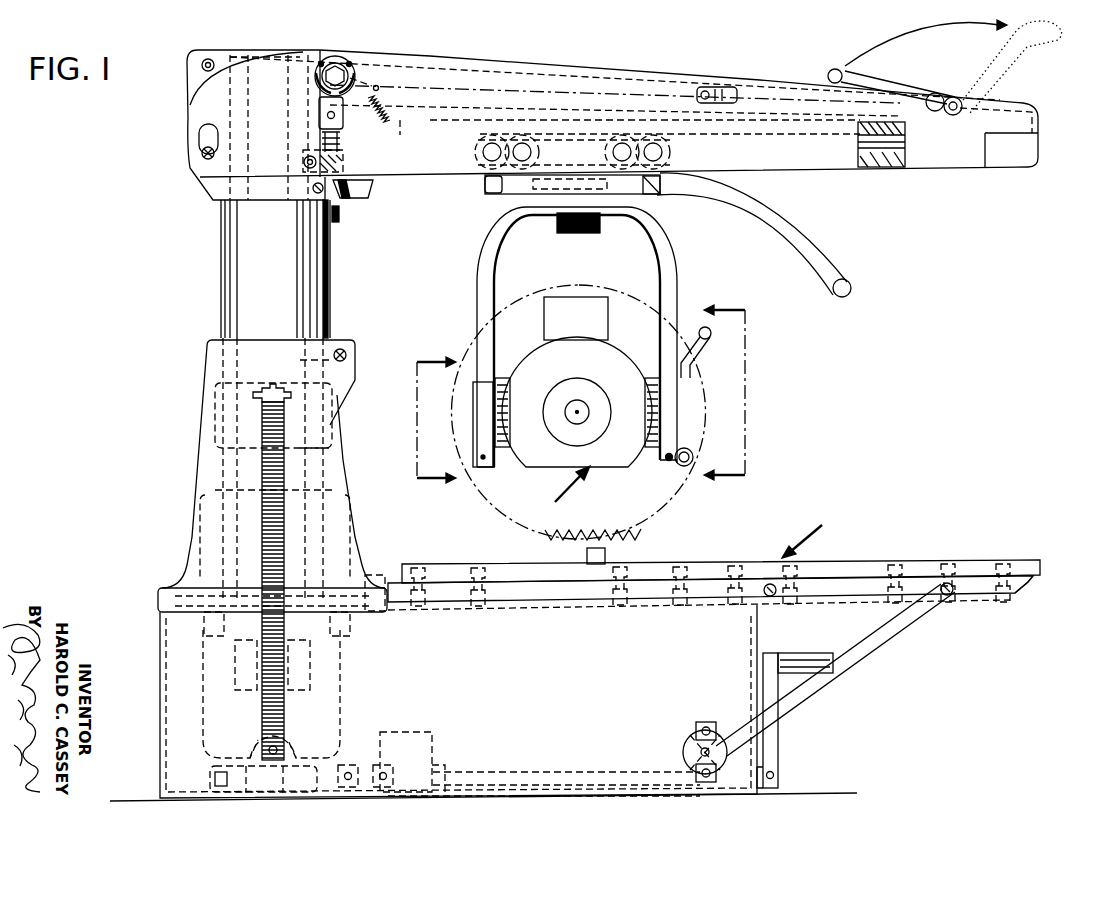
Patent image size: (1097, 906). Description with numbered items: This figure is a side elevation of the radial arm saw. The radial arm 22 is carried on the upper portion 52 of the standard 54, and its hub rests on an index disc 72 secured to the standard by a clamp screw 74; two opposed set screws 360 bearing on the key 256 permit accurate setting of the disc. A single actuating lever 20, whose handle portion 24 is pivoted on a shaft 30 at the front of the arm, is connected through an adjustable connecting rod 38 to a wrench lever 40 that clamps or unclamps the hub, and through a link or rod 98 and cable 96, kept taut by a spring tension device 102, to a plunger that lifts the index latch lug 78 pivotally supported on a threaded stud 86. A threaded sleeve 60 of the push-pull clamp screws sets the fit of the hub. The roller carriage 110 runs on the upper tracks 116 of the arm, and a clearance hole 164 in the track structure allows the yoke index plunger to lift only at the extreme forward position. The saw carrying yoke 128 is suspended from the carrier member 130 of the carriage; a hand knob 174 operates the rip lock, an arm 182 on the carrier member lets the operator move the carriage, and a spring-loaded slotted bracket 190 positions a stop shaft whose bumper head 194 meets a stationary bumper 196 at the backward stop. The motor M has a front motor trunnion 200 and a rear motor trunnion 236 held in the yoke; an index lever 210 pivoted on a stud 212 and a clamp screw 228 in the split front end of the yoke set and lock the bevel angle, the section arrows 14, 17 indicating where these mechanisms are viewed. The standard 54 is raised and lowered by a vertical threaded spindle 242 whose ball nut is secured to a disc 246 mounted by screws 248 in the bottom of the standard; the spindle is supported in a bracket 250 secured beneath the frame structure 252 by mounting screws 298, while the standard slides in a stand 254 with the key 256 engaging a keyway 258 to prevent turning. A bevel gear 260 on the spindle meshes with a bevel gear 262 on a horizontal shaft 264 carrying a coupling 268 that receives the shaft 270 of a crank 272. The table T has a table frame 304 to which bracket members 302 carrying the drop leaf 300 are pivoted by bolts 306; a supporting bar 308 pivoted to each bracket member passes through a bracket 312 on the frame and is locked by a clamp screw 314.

The actuating lever 20 is at (831, 70).
The radial arm 22 is at (546, 60).
The handle portion 24 is at (1019, 67).
The horizontal rod or shaft 30 is at (951, 115).
The adjustable connecting rod 38 is at (436, 123).
The wrench lever 40 is at (347, 118).
The upper portion of the standard 52 is at (222, 114).
The standard 54 is at (222, 238).
The externally and internally threaded sleeve 60 is at (202, 64).
The index disc 72 is at (205, 186).
The clamp screw 74 is at (300, 215).
The index latch lug 78 is at (343, 160).
The threaded stud 86 is at (304, 162).
The cable 96 is at (460, 86).
The link or rod 98 is at (738, 88).
The spring tension device 102 is at (380, 110).
The roller carriage 110 is at (664, 155).
The upper tracks 116 is at (898, 152).
The saw carrying yoke 128 is at (480, 294).
The carrier member 130 is at (660, 189).
The clearance hole 164 is at (862, 136).
The hand knob 174 is at (572, 232).
The arm 182 is at (792, 234).
The spring-loaded slotted bracket 190 is at (500, 195).
The bumper head 194 is at (485, 184).
The stationary bumper 196 is at (362, 192).
The front motor trunnion 200 is at (628, 470).
The index lever 210 is at (700, 348).
The stud 212 is at (676, 465).
The clamp screw 228 is at (684, 467).
The rear motor trunnion 236 is at (505, 378).
The vertical threaded spindle 242 is at (262, 520).
The disc 246 is at (298, 686).
The screws 248 is at (245, 694).
The bracket 250 is at (345, 691).
The frame structure 252 is at (160, 660).
The stand or base 254 is at (232, 490).
The key 256 is at (332, 272).
The keyway 258 is at (340, 471).
The bevel gear 260 is at (292, 742).
The bevel gear 262 is at (262, 795).
The horizontal shaft 264 is at (340, 795).
The coupling 268 is at (408, 762).
The crank shaft 270 is at (508, 768).
The crank 272 is at (782, 750).
The mounting screws 298 is at (215, 625).
The drop leaf 300 is at (884, 563).
The bracket members 302 is at (979, 594).
The table frame 304 is at (762, 598).
The bolts 306 is at (775, 595).
The supporting bar 308 is at (808, 690).
The bracket 312 is at (700, 722).
The clamp screw 314 is at (688, 735).
The opposed set screws 360 is at (342, 214).
The section line 14 is at (720, 391).
The section line 17 is at (443, 417).
The motor M is at (564, 490).
The table T is at (809, 533).